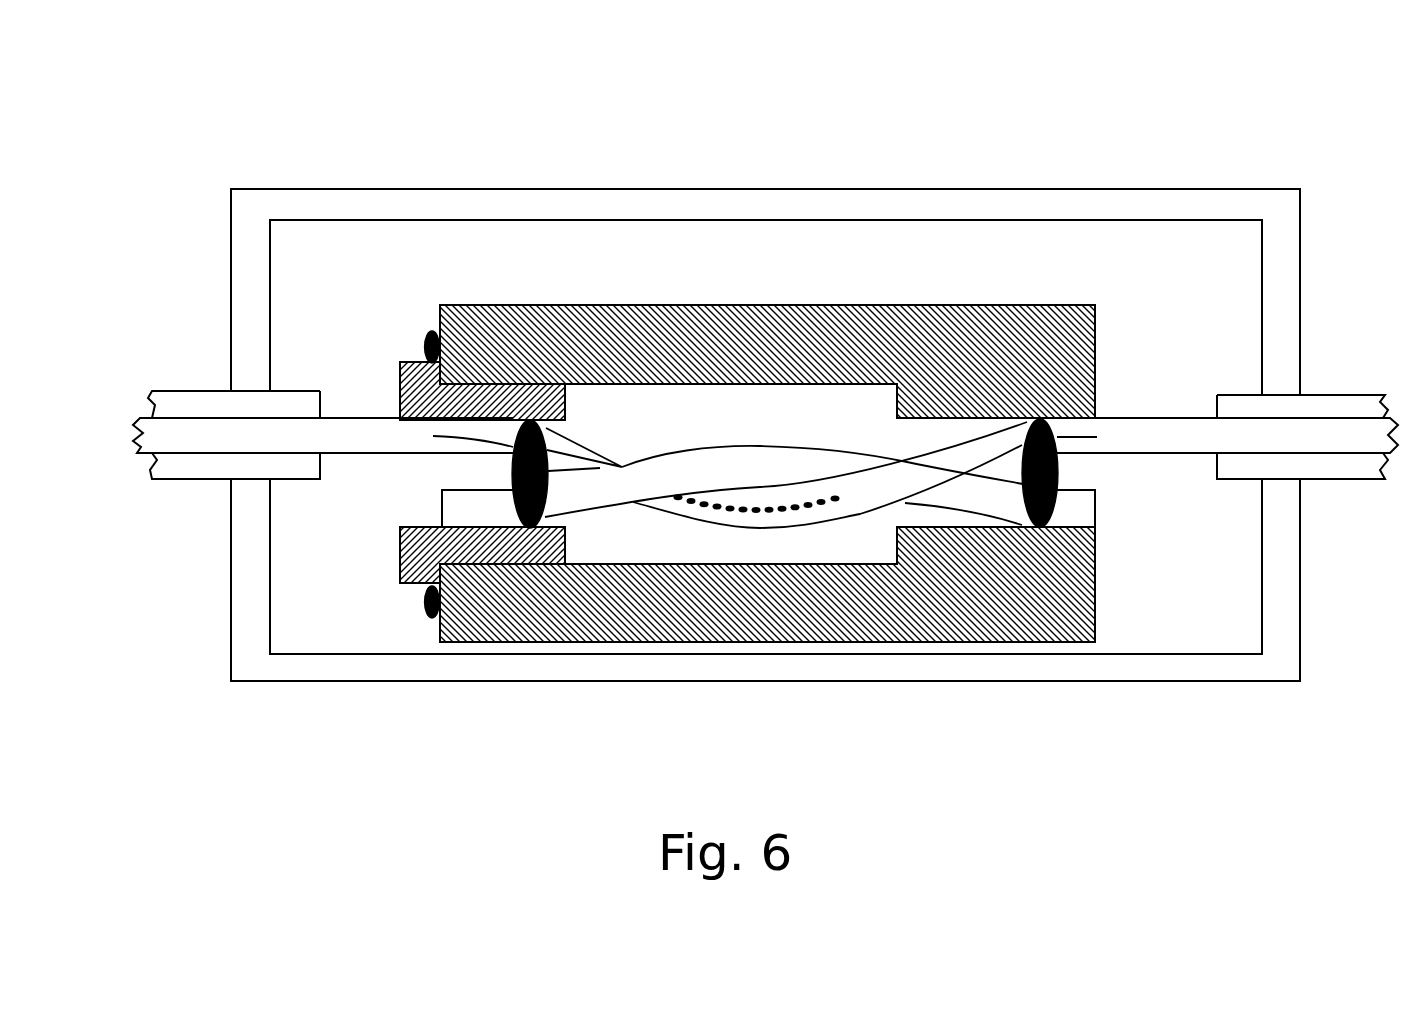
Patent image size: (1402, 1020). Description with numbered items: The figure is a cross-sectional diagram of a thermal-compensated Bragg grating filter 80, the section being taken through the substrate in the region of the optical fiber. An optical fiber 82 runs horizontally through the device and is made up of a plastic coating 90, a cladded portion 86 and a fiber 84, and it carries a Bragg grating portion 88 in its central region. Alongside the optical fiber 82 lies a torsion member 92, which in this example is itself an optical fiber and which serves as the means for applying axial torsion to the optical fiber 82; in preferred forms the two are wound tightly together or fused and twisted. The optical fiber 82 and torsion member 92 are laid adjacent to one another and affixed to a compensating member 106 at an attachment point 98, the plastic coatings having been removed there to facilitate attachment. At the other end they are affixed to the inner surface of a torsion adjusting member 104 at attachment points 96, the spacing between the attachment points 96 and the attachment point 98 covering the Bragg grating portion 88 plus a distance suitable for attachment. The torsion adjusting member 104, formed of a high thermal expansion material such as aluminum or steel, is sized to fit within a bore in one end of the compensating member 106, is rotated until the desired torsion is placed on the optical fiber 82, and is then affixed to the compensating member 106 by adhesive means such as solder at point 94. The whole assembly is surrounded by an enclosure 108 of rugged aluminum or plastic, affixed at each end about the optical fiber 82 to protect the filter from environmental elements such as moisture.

The thermal-compensated Bragg grating filter 80 is at (368, 137).
The optical fiber 82 is at (206, 443).
The fiber 84 is at (862, 500).
The cladded portion 86 is at (672, 512).
The Bragg grating portion 88 is at (758, 510).
The plastic coating 90 is at (195, 391).
The torsion member 92 is at (473, 517).
The point 94 is at (428, 338).
The attachment points 96 is at (512, 471).
The attachment point 98 is at (1057, 472).
The torsion adjusting member 104 is at (398, 383).
The compensating member 106 is at (546, 305).
The enclosure 108 is at (231, 278).